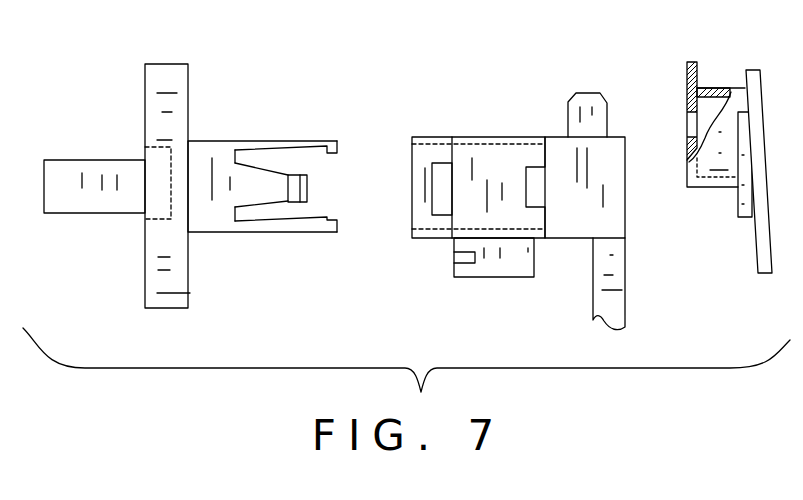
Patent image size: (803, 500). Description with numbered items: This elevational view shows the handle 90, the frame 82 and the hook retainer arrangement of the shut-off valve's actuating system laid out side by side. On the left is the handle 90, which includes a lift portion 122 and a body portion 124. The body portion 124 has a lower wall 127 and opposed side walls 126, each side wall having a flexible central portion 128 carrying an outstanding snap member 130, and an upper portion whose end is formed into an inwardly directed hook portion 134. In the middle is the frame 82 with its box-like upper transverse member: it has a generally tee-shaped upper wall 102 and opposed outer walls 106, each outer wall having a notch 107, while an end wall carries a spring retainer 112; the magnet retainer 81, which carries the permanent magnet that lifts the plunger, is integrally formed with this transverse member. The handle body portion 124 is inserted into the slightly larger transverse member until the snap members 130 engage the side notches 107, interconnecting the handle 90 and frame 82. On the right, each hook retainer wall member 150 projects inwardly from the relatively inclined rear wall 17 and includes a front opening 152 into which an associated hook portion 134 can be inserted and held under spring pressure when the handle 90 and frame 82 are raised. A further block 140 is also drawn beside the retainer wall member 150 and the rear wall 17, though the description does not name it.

The rear wall 17 is at (756, 247).
The magnet retainer 81 is at (502, 278).
The frame 82 is at (455, 98).
The handle 90 is at (120, 117).
The upper wall 102 is at (462, 137).
The outer walls 106 is at (517, 168).
The notch 107 is at (566, 218).
The spring retainer 112 is at (440, 215).
The lift portion 122 is at (82, 213).
The body portion 124 is at (201, 140).
The side walls 126 is at (145, 131).
The lower wall 127 is at (258, 232).
The central portion 128 is at (248, 197).
The snap member 130 is at (308, 186).
The end hook portion 134 is at (337, 145).
The block 140 is at (737, 203).
The hook retainer wall member 150 is at (688, 80).
The front opening 152 is at (688, 122).